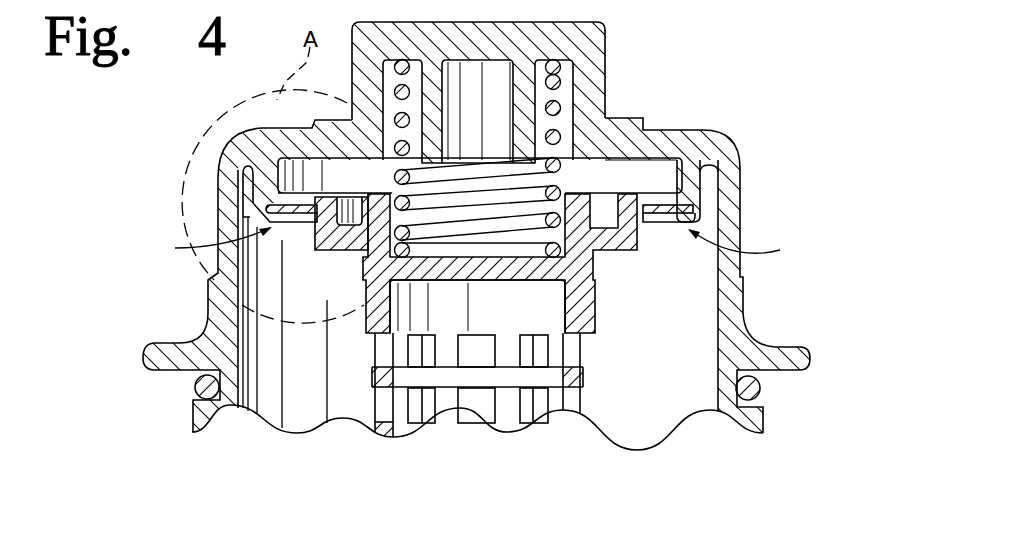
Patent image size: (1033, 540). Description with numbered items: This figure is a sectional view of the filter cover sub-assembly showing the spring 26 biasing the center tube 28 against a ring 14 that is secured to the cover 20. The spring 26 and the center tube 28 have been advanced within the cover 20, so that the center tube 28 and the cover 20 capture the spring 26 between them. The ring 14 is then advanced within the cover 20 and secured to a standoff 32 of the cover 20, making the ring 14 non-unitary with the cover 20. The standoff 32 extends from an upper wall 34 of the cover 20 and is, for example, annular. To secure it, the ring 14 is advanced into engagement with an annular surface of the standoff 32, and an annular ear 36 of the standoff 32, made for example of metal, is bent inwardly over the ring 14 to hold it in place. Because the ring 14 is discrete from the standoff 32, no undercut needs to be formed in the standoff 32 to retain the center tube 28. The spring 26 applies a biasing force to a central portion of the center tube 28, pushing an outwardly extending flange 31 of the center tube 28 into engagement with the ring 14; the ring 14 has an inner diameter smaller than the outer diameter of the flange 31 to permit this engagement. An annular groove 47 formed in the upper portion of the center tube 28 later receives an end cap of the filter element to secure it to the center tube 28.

The ring 14 is at (286, 218).
The cover 20 is at (658, 118).
The spring 26 is at (557, 108).
The center tube 28 is at (368, 381).
The outwardly extending flange 31 is at (303, 191).
The standoff 32 is at (255, 193).
The upper wall 34 is at (670, 137).
The annular ear 36 is at (256, 223).
The annular groove 47 is at (366, 256).